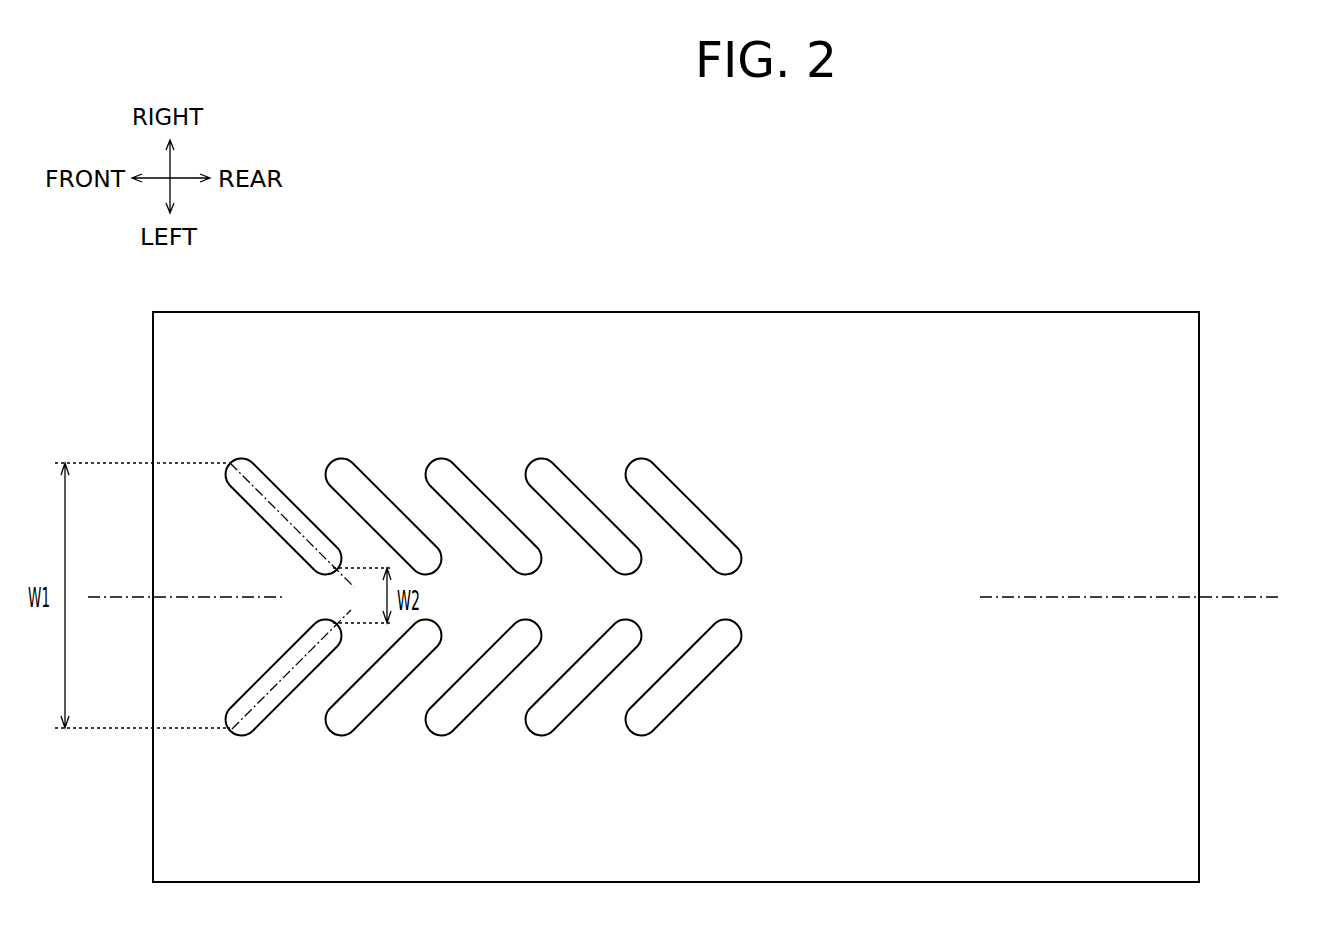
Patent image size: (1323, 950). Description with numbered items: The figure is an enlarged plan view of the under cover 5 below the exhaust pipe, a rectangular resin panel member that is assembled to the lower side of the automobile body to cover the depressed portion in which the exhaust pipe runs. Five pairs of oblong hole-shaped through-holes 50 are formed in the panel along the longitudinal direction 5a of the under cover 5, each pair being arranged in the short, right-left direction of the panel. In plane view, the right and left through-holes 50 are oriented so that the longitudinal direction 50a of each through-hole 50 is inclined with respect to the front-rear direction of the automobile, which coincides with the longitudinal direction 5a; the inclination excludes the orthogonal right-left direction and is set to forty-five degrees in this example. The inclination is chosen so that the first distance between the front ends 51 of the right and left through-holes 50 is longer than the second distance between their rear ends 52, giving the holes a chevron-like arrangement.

The under cover below the exhaust pipe 5 is at (738, 357).
The longitudinal direction of the under cover 5a is at (699, 600).
The through-hole 50 is at (483, 598).
The longitudinal direction of the through-hole 50a is at (229, 463).
The front end of the through-hole 51 is at (231, 462).
The rear end of the through-hole 52 is at (336, 574).